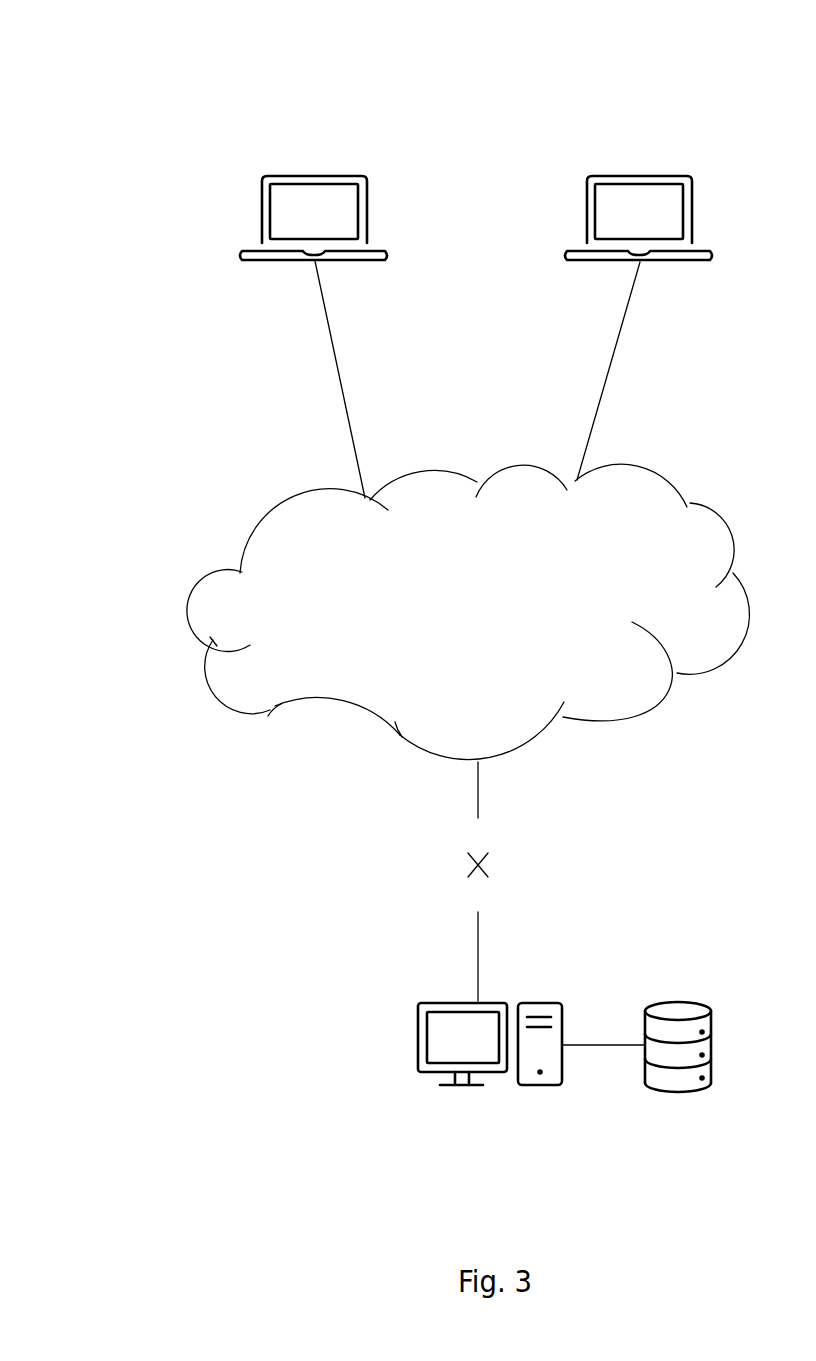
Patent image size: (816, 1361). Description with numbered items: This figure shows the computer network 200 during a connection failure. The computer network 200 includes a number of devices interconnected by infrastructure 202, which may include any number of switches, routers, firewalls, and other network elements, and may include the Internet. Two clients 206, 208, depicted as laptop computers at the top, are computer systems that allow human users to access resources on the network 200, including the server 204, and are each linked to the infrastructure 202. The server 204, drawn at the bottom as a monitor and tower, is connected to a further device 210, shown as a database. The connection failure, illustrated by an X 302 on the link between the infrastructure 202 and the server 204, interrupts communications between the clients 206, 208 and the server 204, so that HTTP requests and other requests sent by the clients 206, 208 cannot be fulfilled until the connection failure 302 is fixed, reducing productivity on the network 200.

The computer network 200 is at (112, 112).
The infrastructure 202 is at (468, 641).
The server 204 is at (490, 1031).
The client 206 is at (313, 302).
The client 208 is at (638, 293).
The device 210 is at (636, 1075).
The connection failure 302 is at (432, 862).